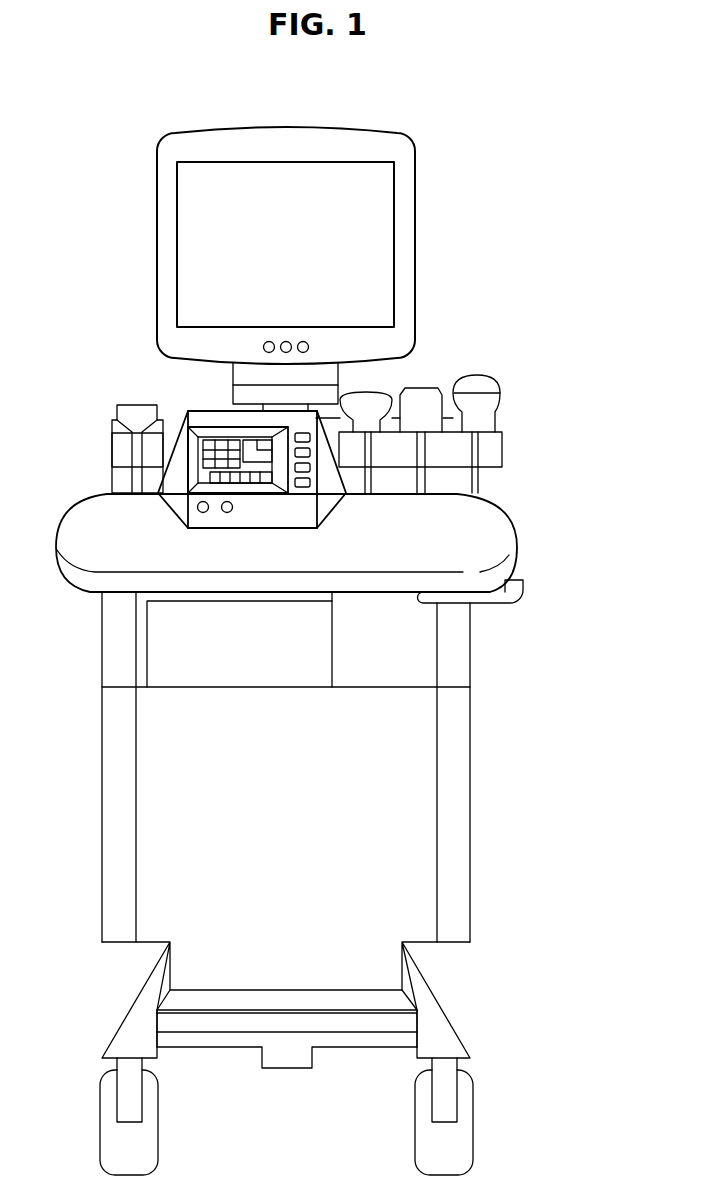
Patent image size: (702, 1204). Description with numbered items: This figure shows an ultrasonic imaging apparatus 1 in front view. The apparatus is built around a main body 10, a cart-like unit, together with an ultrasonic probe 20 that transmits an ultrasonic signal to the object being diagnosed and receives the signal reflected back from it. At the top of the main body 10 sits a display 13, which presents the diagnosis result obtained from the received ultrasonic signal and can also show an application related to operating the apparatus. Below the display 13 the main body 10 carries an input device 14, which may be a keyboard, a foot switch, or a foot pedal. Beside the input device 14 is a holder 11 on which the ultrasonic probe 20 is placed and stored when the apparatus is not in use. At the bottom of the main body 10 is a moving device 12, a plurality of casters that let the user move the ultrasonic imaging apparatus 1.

The ultrasonic imaging apparatus 1 is at (512, 128).
The main body 10 is at (483, 797).
The holder 11 is at (457, 450).
The moving device 12 is at (465, 1128).
The display 13 is at (155, 207).
The input device 14 is at (175, 448).
The ultrasonic probe 20 is at (493, 375).